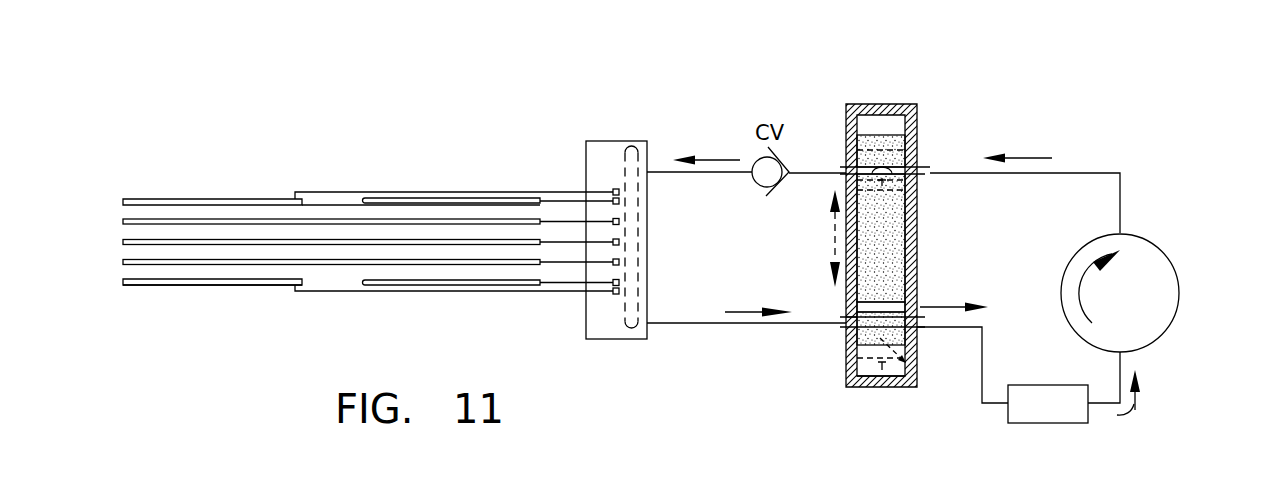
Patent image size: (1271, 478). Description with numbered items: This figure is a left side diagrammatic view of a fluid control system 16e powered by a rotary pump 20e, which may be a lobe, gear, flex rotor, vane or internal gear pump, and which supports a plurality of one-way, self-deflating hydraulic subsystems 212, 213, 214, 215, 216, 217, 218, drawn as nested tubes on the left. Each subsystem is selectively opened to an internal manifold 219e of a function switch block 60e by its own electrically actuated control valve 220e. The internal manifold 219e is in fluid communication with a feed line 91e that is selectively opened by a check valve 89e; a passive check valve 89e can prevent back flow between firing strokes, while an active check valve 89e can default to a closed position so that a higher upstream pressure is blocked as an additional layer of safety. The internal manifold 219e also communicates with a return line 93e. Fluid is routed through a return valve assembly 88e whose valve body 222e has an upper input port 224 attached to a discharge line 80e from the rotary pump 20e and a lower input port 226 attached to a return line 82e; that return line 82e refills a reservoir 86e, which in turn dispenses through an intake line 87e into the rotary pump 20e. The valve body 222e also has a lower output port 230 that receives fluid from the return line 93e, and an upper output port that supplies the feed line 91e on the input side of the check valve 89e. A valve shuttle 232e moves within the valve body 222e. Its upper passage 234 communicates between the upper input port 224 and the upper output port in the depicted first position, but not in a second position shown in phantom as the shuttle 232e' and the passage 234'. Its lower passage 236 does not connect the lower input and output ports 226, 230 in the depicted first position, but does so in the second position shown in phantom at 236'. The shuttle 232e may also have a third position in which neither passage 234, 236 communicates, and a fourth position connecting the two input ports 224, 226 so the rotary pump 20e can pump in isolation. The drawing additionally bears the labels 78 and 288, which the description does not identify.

The self-deflating hydraulic subsystem 212 is at (123, 200).
The self-deflating hydraulic subsystem 213 is at (348, 203).
The self-deflating hydraulic subsystem 214 is at (333, 219).
The self-deflating hydraulic subsystem 215 is at (123, 243).
The self-deflating hydraulic subsystem 216 is at (333, 265).
The self-deflating hydraulic subsystem 217 is at (362, 283).
The self-deflating hydraulic subsystem 218 is at (210, 286).
The fluid control system 16e is at (573, 103).
The catheter tubes 78 is at (552, 168).
The function switch block 60e is at (617, 140).
The feed line 91e is at (703, 173).
The return line 93e is at (747, 324).
The internal manifold 219e is at (634, 284).
The electrically actuated control valve 220e is at (620, 221).
The conduit 288 is at (846, 172).
The check valve 89e is at (754, 216).
The valve body 222e is at (892, 103).
The valve shuttle 232e is at (841, 122).
The return valve assembly 88e is at (910, 96).
The upper input port 224 is at (918, 166).
The upper passage 234 is at (925, 187).
The upper passage in second position 234' is at (922, 238).
The lower passage 236 is at (929, 282).
The lower input port 226 is at (917, 324).
The lower output port 230 is at (847, 328).
The lower passage in second position 236' is at (916, 358).
The valve shuttle in second position 232e' is at (845, 394).
The return line 82e is at (982, 385).
The discharge line 80e is at (1097, 172).
The rotary pump 20e is at (1142, 236).
The intake line 87e is at (1122, 378).
The reservoir 86e is at (1048, 424).